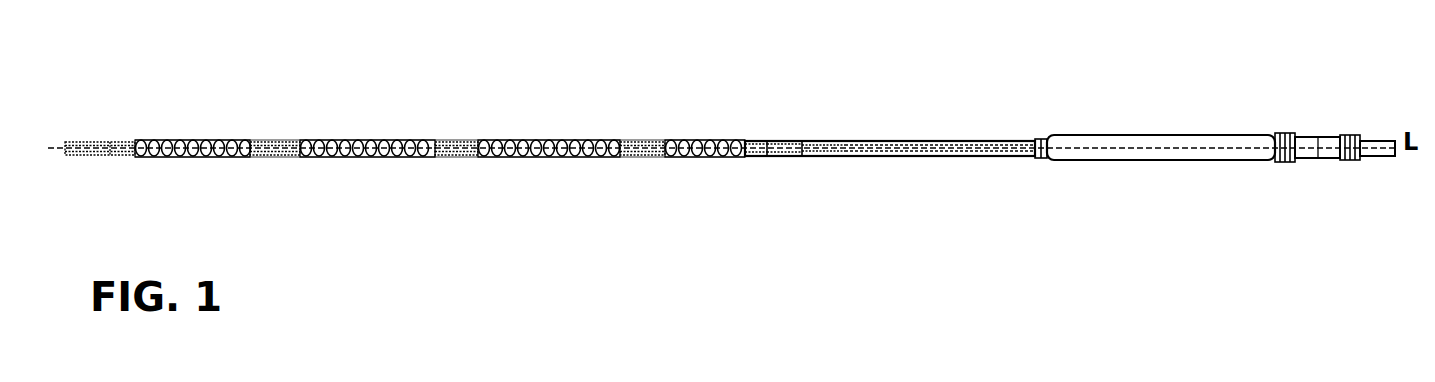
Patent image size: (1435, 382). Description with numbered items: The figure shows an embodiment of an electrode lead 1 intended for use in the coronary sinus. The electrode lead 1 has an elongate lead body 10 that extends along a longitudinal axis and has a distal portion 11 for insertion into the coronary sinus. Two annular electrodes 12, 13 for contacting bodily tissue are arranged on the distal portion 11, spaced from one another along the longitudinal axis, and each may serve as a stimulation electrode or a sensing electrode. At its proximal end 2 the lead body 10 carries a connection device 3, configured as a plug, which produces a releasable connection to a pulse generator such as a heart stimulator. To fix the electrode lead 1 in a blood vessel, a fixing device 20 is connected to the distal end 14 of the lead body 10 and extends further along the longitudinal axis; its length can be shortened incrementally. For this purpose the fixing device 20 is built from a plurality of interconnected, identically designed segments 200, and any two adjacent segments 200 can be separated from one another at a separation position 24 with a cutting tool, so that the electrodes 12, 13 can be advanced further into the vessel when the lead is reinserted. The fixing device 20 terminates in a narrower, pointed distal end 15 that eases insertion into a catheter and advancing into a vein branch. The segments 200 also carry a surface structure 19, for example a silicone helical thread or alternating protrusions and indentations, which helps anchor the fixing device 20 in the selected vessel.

The electrode lead 1 is at (869, 114).
The proximal end 2 is at (1046, 134).
The connection device 3 is at (1179, 124).
The lead body 10 is at (908, 141).
The distal portion 11 is at (845, 156).
The electrode 12 is at (768, 141).
The electrode 13 is at (802, 156).
The distal end 14 is at (745, 157).
The distal end 15 is at (80, 141).
The surface structure 19 is at (198, 141).
The fixing device 20 is at (419, 124).
The separation position 24 is at (290, 141).
The segments 200 is at (566, 164).